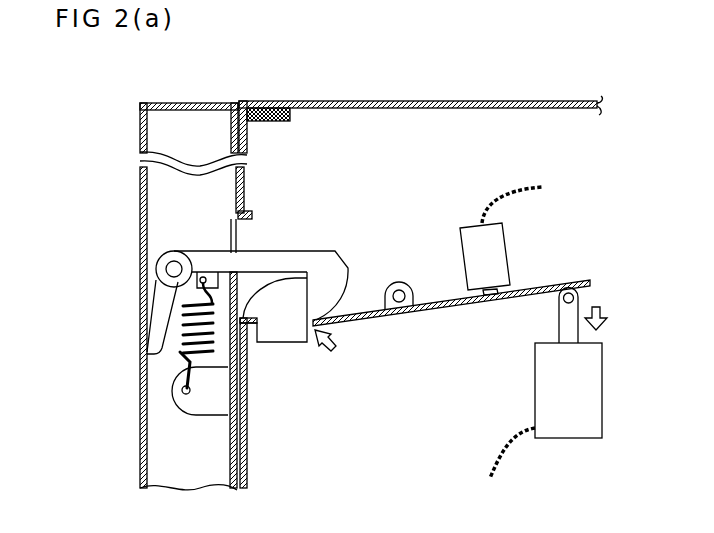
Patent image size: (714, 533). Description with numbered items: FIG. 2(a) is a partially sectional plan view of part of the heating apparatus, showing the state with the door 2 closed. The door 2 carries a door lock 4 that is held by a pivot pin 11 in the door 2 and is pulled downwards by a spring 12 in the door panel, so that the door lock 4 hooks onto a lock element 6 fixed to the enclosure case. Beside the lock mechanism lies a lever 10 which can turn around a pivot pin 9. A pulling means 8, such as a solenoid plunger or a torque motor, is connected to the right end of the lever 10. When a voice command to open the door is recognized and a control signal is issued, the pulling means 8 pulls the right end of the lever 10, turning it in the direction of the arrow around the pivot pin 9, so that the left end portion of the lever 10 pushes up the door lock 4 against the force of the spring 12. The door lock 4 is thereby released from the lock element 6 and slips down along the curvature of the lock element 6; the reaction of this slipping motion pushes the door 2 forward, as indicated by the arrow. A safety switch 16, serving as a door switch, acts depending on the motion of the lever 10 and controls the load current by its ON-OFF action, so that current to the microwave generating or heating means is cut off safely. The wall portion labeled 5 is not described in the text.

The door 2 is at (140, 458).
The door lock 4 is at (293, 262).
The wall plate 5 is at (250, 226).
The lock element 6 is at (274, 337).
The pulling means 8 is at (553, 390).
The pivot pin 9 is at (399, 283).
The lever 10 is at (372, 316).
The pivot pin 11 is at (170, 268).
The spring 12 is at (180, 353).
The safety switch 16 is at (497, 252).